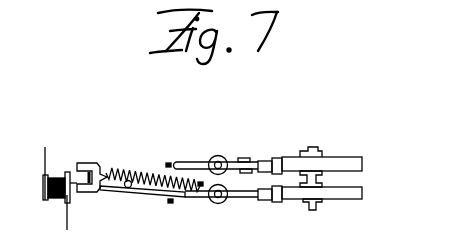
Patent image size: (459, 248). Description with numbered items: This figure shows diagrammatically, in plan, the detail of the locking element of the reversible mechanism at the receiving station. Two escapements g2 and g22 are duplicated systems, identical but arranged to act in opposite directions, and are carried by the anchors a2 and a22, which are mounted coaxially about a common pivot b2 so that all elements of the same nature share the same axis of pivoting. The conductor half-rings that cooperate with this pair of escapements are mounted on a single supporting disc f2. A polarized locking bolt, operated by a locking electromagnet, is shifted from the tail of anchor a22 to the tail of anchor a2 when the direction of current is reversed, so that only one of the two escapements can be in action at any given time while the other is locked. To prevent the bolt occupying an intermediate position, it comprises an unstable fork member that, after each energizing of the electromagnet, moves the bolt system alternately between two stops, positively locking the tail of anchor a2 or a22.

The supporting disc f2 is at (158, 196).
The anchor a2 is at (232, 158).
The anchor a22 is at (257, 199).
The pivot b2 is at (195, 93).
The escapement g2 is at (343, 162).
The escapement g22 is at (337, 193).